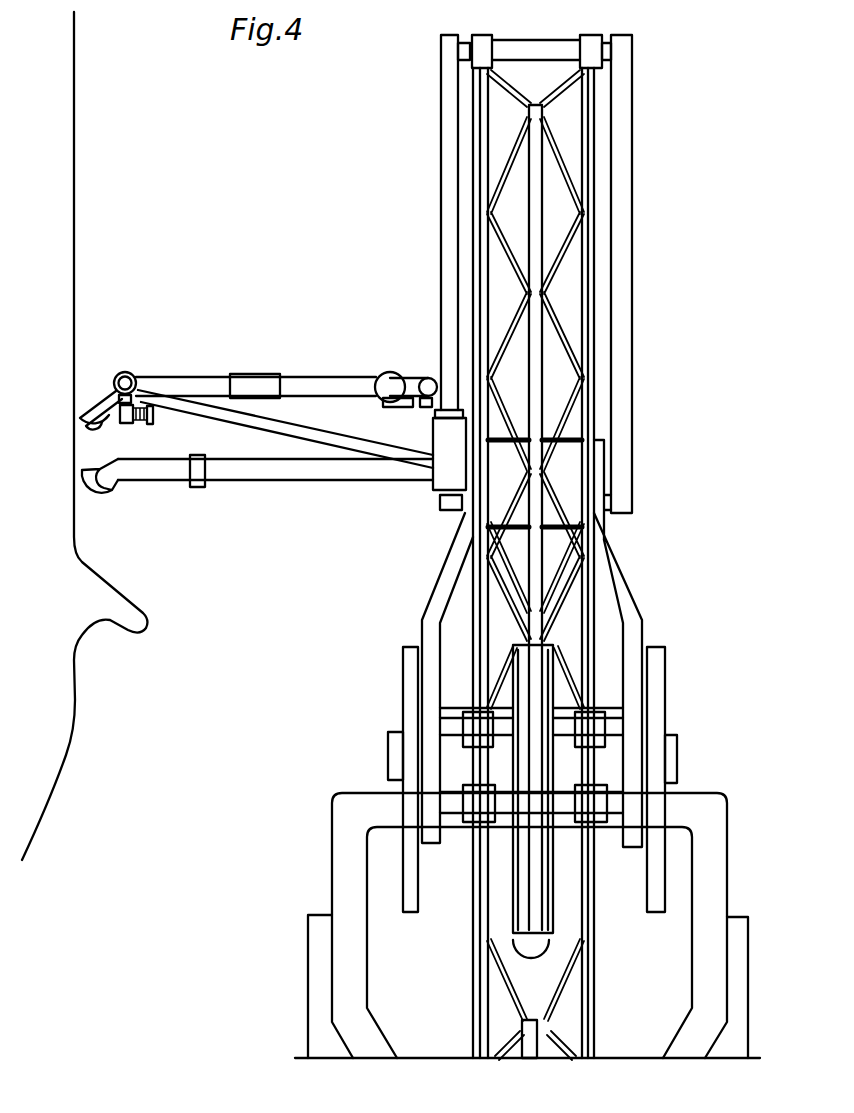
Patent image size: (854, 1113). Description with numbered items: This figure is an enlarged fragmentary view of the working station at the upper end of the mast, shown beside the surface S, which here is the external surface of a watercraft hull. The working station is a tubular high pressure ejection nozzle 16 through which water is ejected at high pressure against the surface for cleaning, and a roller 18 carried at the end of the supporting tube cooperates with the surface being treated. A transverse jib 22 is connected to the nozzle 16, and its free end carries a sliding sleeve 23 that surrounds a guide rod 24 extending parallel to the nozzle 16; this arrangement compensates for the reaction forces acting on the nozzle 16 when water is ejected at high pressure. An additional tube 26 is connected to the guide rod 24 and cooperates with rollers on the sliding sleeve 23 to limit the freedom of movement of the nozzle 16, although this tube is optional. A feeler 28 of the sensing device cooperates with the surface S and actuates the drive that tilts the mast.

The wall / supporting structure S is at (75, 229).
The high pressure ejection nozzle 16 is at (131, 373).
The roller 18 is at (73, 415).
The transverse jib 22 is at (247, 376).
The sliding sleeve 23 is at (388, 372).
The guide rod 24 is at (365, 380).
The additional tube 26 is at (428, 377).
The feeler 28 is at (156, 483).